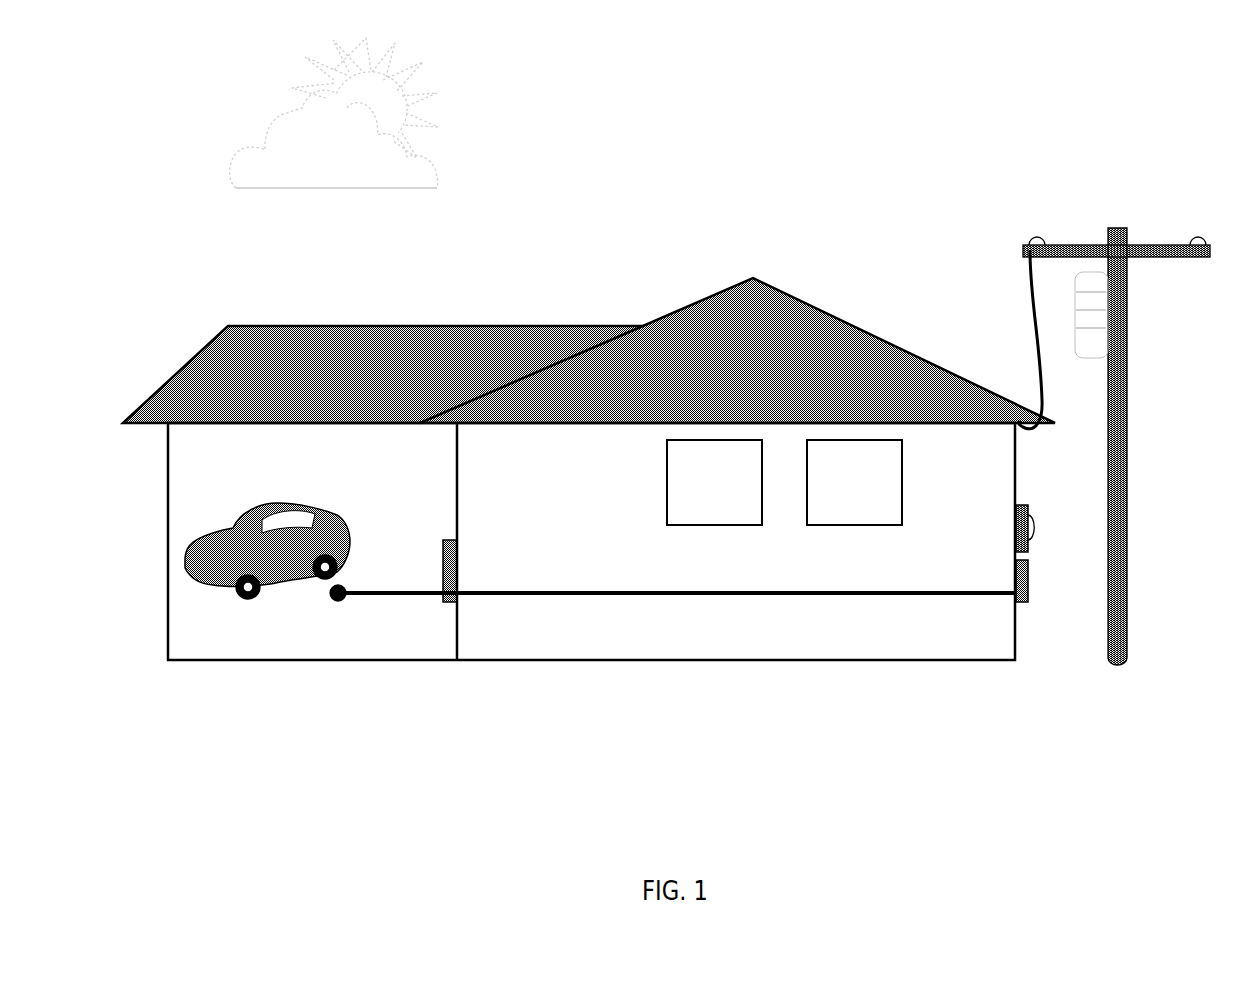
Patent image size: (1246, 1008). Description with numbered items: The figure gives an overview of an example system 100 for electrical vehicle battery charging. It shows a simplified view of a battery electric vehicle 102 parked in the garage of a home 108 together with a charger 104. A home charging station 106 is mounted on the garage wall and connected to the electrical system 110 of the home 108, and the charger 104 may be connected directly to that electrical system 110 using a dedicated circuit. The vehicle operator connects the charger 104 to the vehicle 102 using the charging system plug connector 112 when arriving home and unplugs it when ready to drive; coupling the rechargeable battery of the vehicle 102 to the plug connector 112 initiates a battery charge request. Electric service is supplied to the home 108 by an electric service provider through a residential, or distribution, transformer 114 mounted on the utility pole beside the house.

The system 100 is at (668, 351).
The battery electric vehicle 102 is at (332, 513).
The charger 104 is at (365, 587).
The home charging station 106 is at (460, 553).
The home 108 is at (877, 332).
The electrical system 110 is at (1030, 568).
The charging system plug connector 112 is at (342, 600).
The transformer 114 is at (1127, 303).